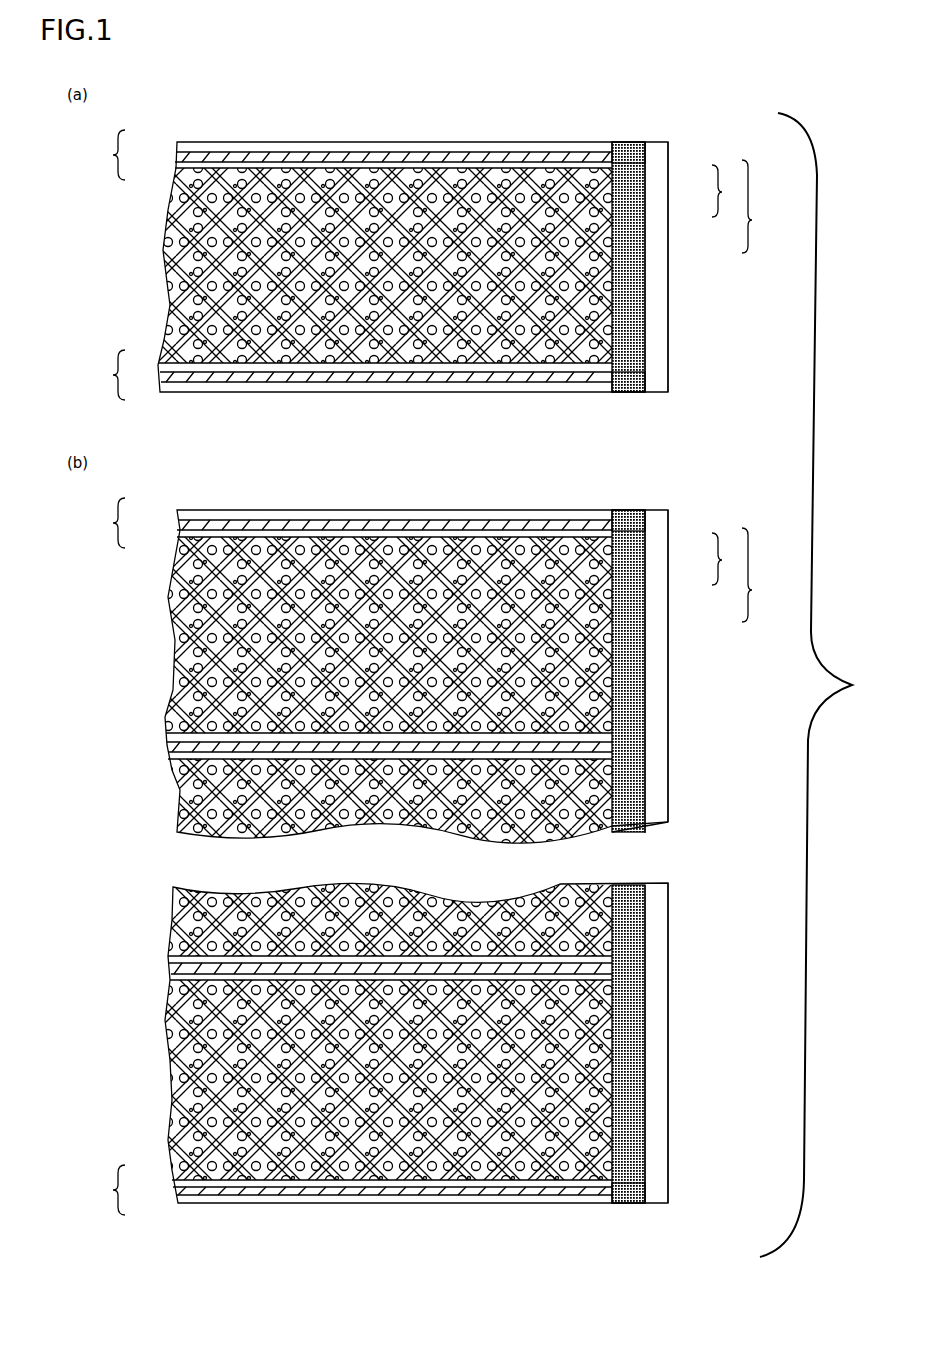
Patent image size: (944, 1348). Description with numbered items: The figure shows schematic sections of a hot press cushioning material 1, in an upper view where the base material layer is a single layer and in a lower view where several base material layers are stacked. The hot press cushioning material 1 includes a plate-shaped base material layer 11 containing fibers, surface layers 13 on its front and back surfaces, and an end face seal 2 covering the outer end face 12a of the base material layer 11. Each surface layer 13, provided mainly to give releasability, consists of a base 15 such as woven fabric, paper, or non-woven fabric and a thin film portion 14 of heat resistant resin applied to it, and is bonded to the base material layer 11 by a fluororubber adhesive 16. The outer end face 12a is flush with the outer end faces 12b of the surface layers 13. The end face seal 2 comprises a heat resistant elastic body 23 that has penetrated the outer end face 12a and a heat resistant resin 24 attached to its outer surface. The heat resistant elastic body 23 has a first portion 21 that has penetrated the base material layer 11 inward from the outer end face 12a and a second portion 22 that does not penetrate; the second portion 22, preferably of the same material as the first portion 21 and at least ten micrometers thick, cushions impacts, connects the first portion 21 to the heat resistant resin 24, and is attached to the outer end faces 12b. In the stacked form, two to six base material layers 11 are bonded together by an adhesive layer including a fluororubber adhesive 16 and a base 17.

The hot press cushioning material 1 is at (191, 123).
The base material layer 11 is at (168, 280).
The outer end face of the base material layer 12a is at (640, 350).
The outer end faces of the surface layers 12b is at (668, 147).
The surface layer 13 is at (110, 672).
The thin film portion 14 is at (177, 146).
The base 15 is at (176, 157).
The fluororubber adhesive 16 is at (176, 165).
The base 17 is at (167, 747).
The end face seal 2 is at (754, 391).
The first portion 21 is at (645, 175).
The second portion 22 is at (645, 208).
The heat resistant elastic body 23 is at (728, 375).
The heat resistant resin 24 is at (656, 242).